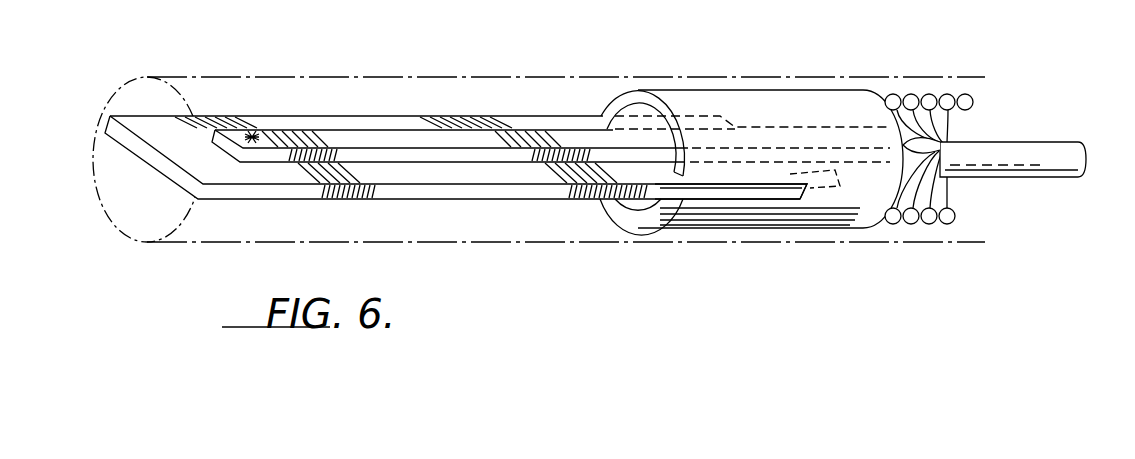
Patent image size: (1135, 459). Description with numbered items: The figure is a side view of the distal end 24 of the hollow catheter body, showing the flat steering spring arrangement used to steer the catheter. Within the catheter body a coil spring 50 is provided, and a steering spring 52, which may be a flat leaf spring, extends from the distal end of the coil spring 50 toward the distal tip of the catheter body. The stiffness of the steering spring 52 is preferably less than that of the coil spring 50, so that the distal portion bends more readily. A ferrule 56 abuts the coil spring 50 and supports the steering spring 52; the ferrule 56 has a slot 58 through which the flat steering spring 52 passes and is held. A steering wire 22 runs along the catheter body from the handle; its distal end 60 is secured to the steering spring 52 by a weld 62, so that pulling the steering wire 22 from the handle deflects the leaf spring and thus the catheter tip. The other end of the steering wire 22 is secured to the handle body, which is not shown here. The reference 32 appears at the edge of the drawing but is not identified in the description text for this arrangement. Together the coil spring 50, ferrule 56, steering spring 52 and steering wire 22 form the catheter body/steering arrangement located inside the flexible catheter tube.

The steering wire 22 is at (1041, 143).
The distal end 24 is at (590, 60).
The assembly 32 is at (948, 44).
The coil spring 50 is at (898, 224).
The steering spring 52 is at (509, 196).
The ferrule 56 is at (749, 98).
The slot 58 is at (720, 174).
The distal end of the steering wire 60 is at (377, 129).
The weld 62 is at (253, 136).